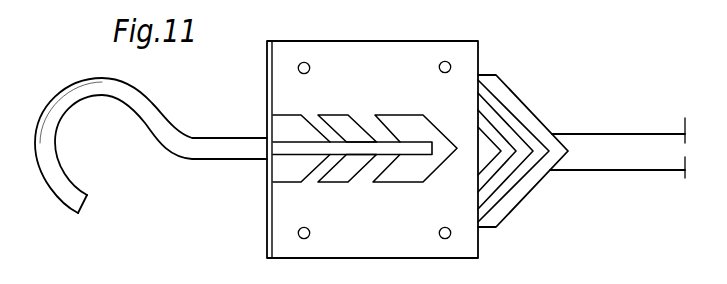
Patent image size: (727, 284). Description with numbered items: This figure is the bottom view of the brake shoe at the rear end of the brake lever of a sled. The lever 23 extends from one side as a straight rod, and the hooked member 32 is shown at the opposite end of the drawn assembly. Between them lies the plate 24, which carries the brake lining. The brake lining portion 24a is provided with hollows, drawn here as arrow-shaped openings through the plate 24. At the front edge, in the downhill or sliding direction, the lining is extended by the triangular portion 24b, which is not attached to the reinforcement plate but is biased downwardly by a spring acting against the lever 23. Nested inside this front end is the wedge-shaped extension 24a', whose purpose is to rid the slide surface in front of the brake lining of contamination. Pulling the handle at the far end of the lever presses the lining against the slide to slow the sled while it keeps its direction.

The hook 32 is at (157, 116).
The plate 24 is at (335, 72).
The hollows 24a is at (365, 122).
The wedge-shaped extension 24a' is at (528, 135).
The triangular portion 24b is at (544, 131).
The lever 23 is at (628, 148).